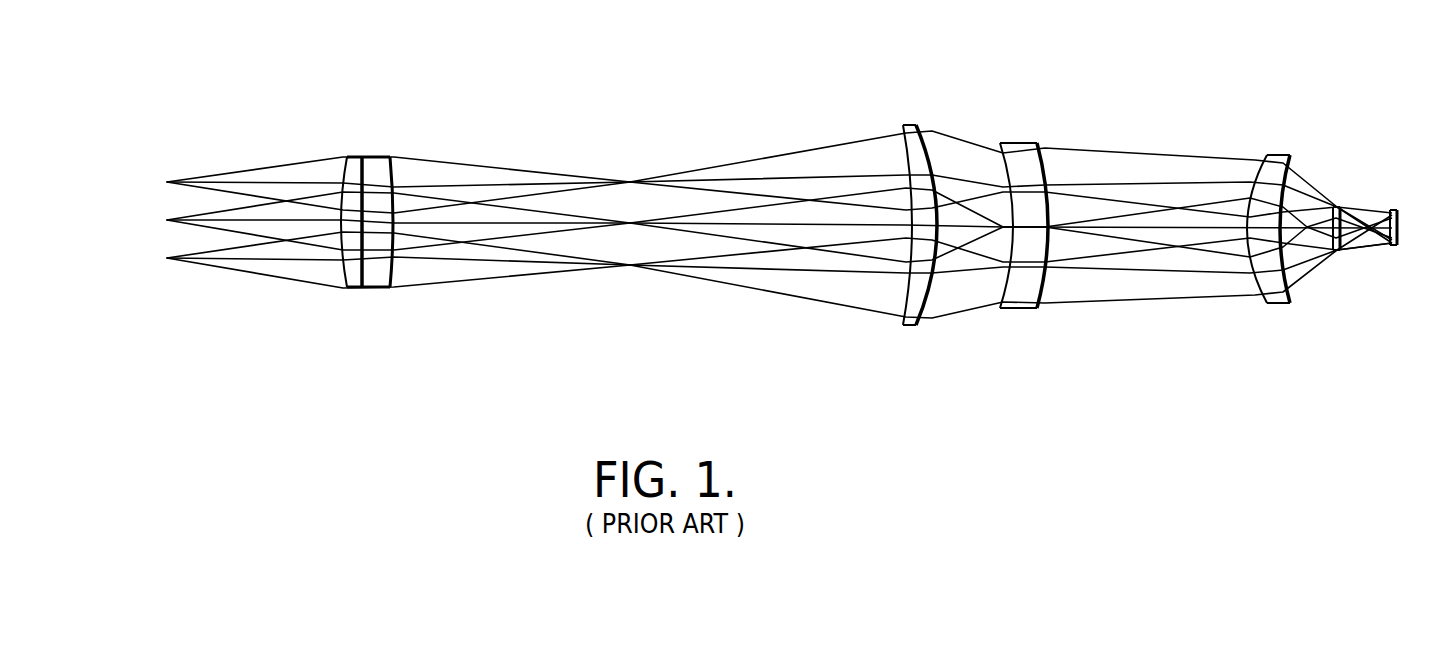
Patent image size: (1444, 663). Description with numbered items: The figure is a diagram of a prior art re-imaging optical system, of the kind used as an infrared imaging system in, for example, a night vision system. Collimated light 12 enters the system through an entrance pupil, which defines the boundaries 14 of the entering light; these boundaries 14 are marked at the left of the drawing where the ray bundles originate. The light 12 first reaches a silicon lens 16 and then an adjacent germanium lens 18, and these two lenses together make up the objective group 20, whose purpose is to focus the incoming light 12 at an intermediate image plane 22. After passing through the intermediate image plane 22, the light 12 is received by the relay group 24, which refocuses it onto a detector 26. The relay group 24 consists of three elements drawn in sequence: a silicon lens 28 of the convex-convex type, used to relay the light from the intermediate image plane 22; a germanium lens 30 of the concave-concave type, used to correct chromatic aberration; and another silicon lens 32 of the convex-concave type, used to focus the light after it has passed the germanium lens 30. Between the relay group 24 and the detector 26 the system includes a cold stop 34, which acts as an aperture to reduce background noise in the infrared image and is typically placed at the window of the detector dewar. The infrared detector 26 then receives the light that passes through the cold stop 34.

The collimated light 12 is at (255, 165).
The boundaries of the entering light 14 is at (167, 172).
The silicon lens 16 is at (348, 156).
The germanium lens 18 is at (372, 157).
The objective group 20 is at (377, 233).
The intermediate image plane 22 is at (631, 160).
The relay group 24 is at (1112, 257).
The detector 26 is at (1395, 210).
The silicon lens 28 is at (906, 125).
The germanium lens 30 is at (1020, 143).
The silicon lens 32 is at (1283, 155).
The cold stop 34 is at (1340, 207).